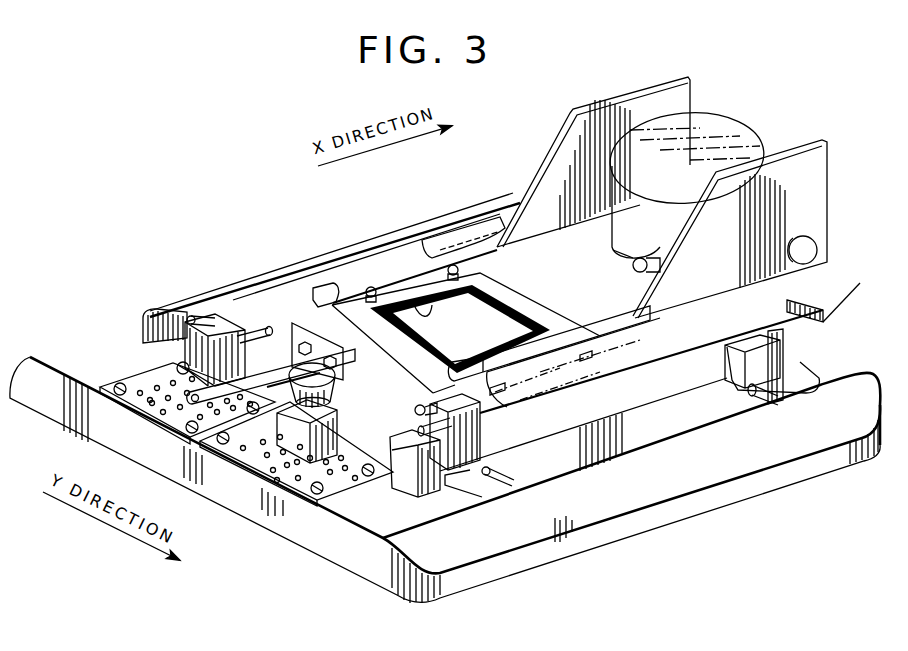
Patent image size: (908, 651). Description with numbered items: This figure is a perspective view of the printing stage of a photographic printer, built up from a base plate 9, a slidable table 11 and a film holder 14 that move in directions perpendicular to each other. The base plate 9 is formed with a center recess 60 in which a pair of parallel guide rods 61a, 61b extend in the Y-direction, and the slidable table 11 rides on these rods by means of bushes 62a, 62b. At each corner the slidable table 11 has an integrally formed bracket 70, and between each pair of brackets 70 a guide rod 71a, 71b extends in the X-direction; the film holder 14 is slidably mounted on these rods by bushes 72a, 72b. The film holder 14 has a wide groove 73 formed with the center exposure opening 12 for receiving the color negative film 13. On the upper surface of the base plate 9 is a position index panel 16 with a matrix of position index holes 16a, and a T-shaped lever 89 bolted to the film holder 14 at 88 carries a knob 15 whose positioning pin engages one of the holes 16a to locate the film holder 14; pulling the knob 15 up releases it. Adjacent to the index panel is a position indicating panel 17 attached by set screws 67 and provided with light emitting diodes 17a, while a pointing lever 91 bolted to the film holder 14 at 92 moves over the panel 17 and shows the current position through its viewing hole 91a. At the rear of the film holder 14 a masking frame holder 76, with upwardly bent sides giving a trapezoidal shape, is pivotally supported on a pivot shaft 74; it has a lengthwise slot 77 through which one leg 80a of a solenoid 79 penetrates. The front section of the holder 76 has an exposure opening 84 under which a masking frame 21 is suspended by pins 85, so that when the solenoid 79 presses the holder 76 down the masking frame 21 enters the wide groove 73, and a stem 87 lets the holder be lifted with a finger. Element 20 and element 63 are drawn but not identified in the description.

The base plate 9 is at (328, 537).
The slidable table 11 is at (636, 423).
The center exposure opening 12 is at (410, 300).
The color negative film 13 is at (548, 368).
The film holder 14 is at (558, 412).
The knob 15 is at (322, 382).
The position index panel 16 is at (235, 450).
The position index holes 16a is at (297, 480).
The position indicating panel 17 is at (152, 378).
The light emitting diodes 17a is at (153, 402).
The frame plate 20 is at (524, 300).
The masking frame 21 is at (500, 291).
The center recess 60 is at (804, 390).
The guide rod 61a is at (506, 478).
The guide rod 61b is at (760, 395).
The bush 62a is at (483, 482).
The bush 62b is at (745, 384).
The screw 63 is at (367, 476).
The set screws 67 is at (117, 382).
The bracket 70 is at (783, 345).
The guide rod 71a is at (240, 332).
The guide rod 71b is at (474, 441).
The bush 72a is at (263, 325).
The bush 72b is at (478, 422).
The wide groove 73 is at (592, 378).
The pivot shaft 74 is at (814, 248).
The masking frame holder 76 is at (698, 266).
The slot 77 is at (632, 262).
The solenoid 79 is at (735, 132).
The leg 80a is at (652, 258).
The exposure opening 84 is at (562, 312).
The pins 85 is at (372, 287).
The stem 87 is at (314, 282).
The bolt location 88 is at (420, 406).
The lever 89 is at (347, 403).
The pointing lever 91 is at (237, 393).
The viewing hole 91a is at (193, 401).
The bolt location 92 is at (298, 356).